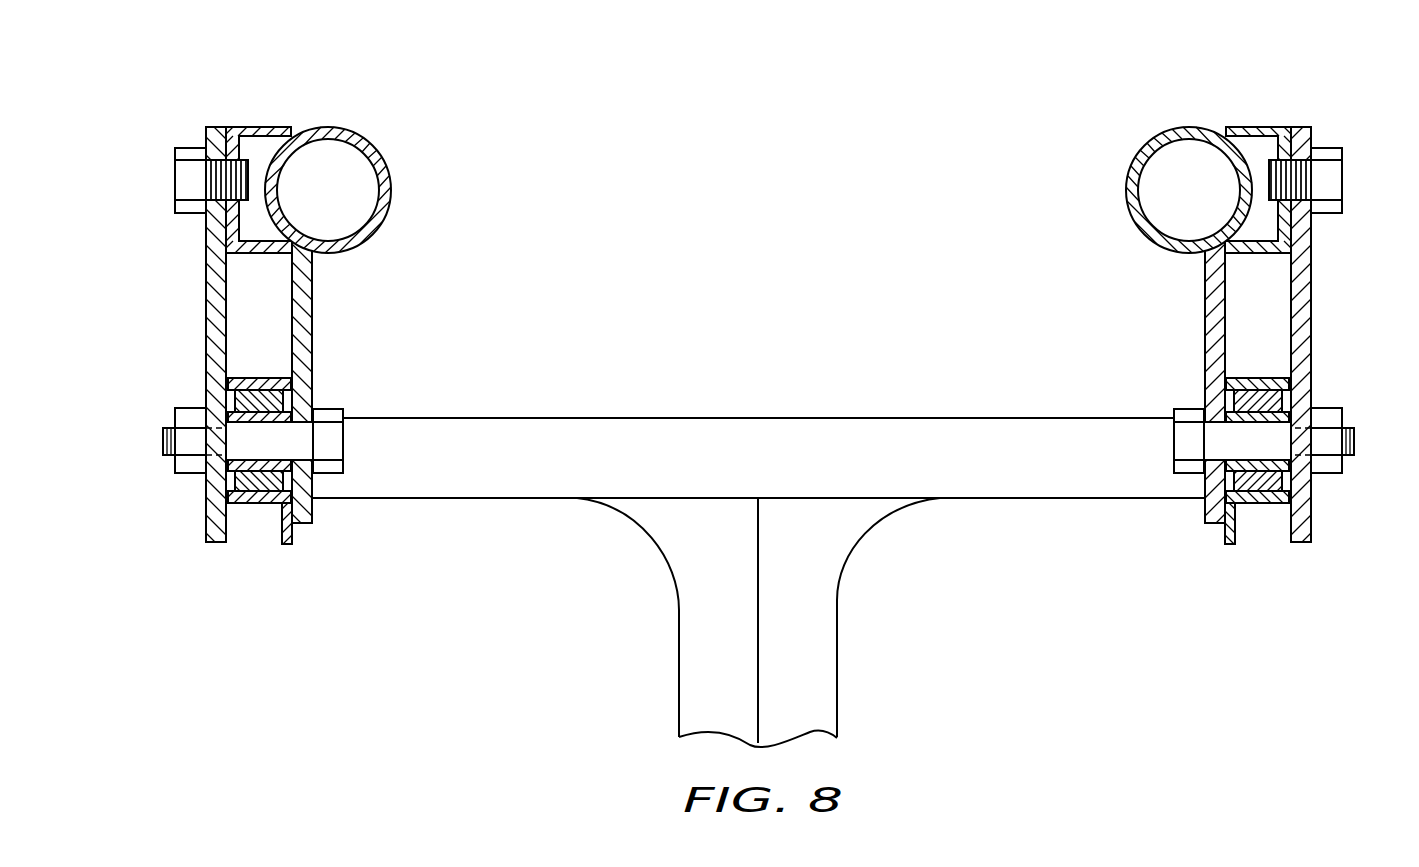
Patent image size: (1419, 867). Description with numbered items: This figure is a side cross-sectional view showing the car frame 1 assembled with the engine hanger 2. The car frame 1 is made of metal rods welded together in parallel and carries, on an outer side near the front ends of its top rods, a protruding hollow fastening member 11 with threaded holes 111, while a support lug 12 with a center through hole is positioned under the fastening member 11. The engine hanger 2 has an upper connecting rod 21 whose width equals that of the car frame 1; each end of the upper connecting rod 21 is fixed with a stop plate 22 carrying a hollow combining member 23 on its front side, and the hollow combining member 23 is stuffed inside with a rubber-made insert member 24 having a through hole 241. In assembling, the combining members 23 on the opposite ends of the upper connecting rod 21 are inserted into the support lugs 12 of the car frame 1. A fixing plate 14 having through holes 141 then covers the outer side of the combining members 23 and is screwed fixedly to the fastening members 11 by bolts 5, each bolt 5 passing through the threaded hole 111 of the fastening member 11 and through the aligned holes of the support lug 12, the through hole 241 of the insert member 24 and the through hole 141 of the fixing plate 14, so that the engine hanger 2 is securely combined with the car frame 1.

The car frame 1 is at (362, 143).
The engine hanger 2 is at (792, 653).
The bolt 5 is at (188, 179).
The fastening member 11 is at (273, 135).
The support lug 12 is at (300, 332).
The fixing plate 14 is at (215, 288).
The upper connecting rod 21 is at (758, 457).
The stop plate 22 is at (287, 525).
The hollow combining member 23 is at (252, 387).
The insert member 24 is at (262, 478).
The threaded hole 111 is at (237, 160).
The through hole 141 is at (208, 128).
The through hole 241 is at (235, 493).